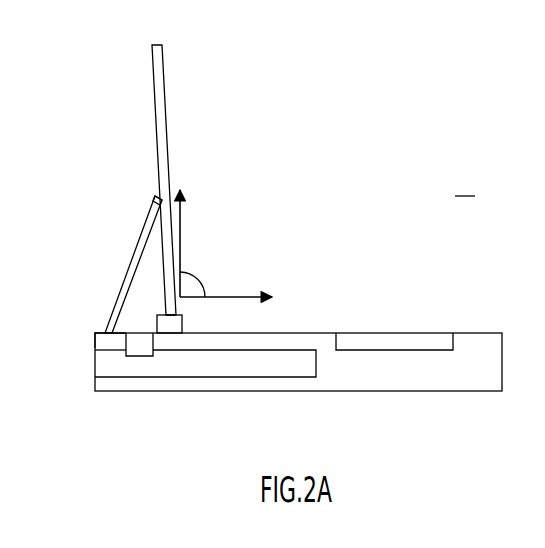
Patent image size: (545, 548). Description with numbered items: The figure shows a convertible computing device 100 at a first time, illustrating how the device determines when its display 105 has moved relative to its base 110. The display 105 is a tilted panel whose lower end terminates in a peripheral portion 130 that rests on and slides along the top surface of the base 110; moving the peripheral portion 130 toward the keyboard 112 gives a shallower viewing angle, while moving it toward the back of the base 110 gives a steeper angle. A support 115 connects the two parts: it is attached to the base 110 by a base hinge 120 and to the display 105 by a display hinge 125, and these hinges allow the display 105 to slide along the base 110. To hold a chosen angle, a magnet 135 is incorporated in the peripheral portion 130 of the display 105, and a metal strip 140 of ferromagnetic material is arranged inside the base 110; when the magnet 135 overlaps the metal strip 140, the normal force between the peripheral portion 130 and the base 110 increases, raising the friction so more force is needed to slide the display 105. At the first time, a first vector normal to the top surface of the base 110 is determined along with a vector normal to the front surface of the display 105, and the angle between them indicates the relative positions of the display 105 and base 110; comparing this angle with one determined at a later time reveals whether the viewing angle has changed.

The computing device 100 is at (407, 138).
The display 105 is at (168, 146).
The base 110 is at (290, 333).
The keyboard 112 is at (388, 343).
The support 115 is at (125, 278).
The base hinge 120 is at (95, 332).
The display hinge 125 is at (159, 198).
The peripheral portion 130 is at (182, 316).
The magnet 135 is at (168, 325).
The metal strip 140 is at (228, 367).